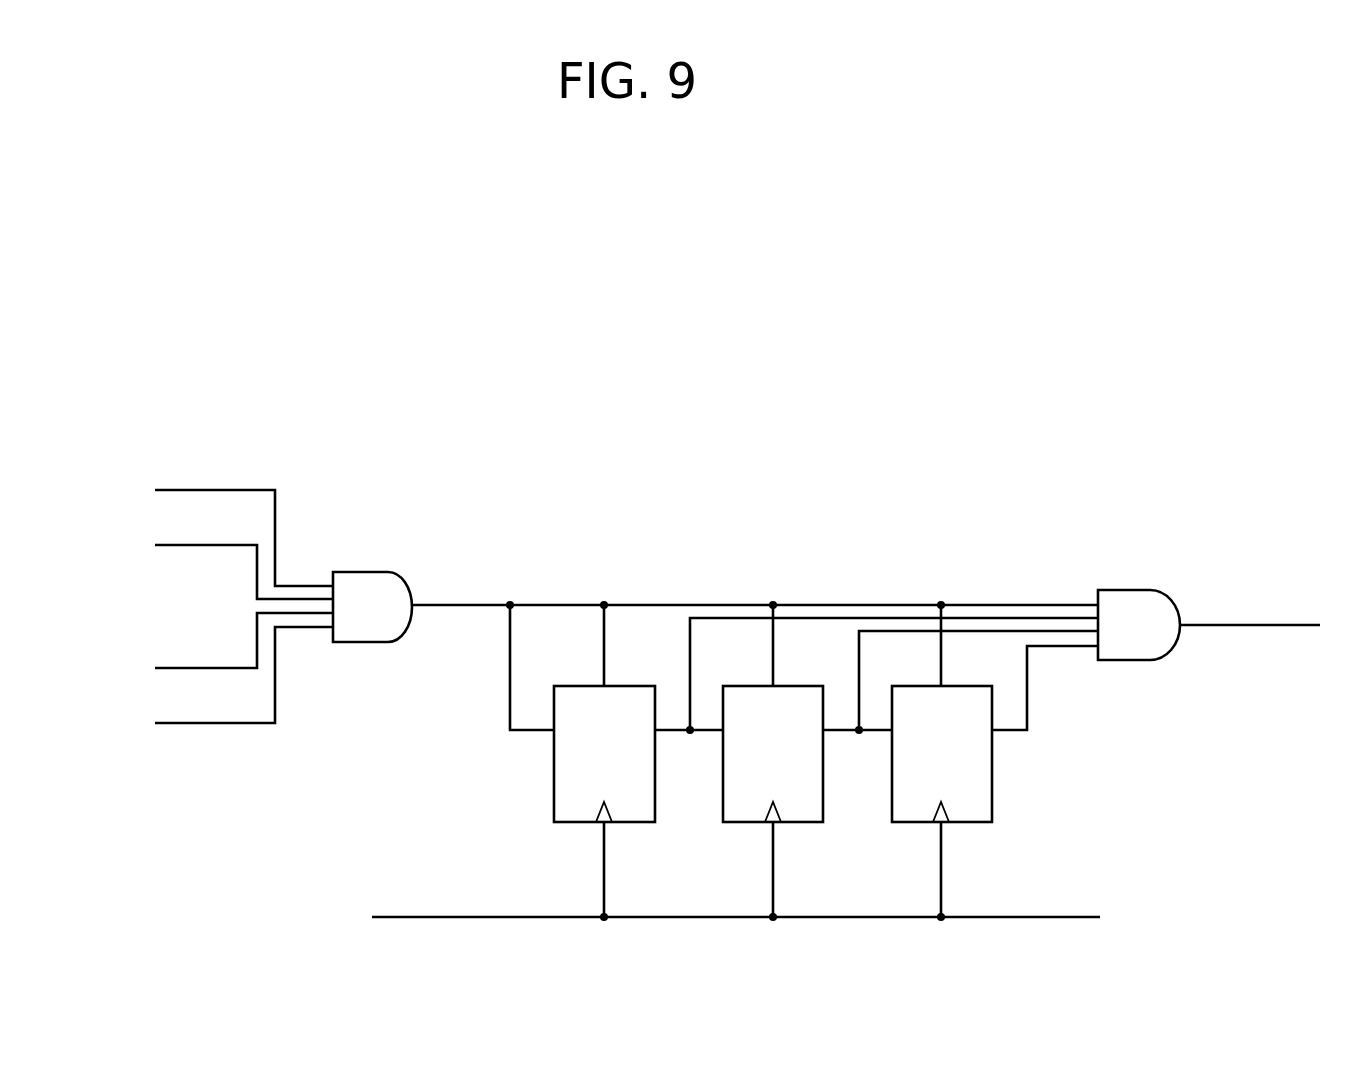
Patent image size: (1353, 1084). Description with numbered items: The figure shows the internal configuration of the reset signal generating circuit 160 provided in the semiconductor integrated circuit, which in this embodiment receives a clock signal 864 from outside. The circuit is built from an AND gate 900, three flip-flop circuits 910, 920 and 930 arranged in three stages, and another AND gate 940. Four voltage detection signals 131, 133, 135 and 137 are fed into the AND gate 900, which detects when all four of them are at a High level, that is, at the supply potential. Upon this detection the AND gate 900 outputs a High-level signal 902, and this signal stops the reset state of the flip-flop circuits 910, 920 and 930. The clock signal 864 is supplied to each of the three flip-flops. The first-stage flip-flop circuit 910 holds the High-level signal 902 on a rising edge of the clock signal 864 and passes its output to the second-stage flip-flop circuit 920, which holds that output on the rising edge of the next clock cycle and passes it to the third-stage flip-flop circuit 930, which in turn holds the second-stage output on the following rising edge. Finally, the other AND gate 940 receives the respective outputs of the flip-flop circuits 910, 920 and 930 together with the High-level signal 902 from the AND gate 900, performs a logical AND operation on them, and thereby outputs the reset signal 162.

The voltage detection signal 131 is at (170, 490).
The voltage detection signal 133 is at (170, 545).
The voltage detection signal 135 is at (170, 668).
The voltage detection signal 137 is at (170, 723).
The reset signal generating circuit 160 is at (696, 596).
The AND gate 900 is at (352, 572).
The High-level signal 902 is at (447, 605).
The flip-flop circuit 910 is at (555, 802).
The flip-flop circuit 920 is at (723, 802).
The flip-flop circuit 930 is at (892, 802).
The AND gate 940 is at (1120, 590).
The reset signal 162 is at (1262, 625).
The clock signal 864 is at (417, 917).